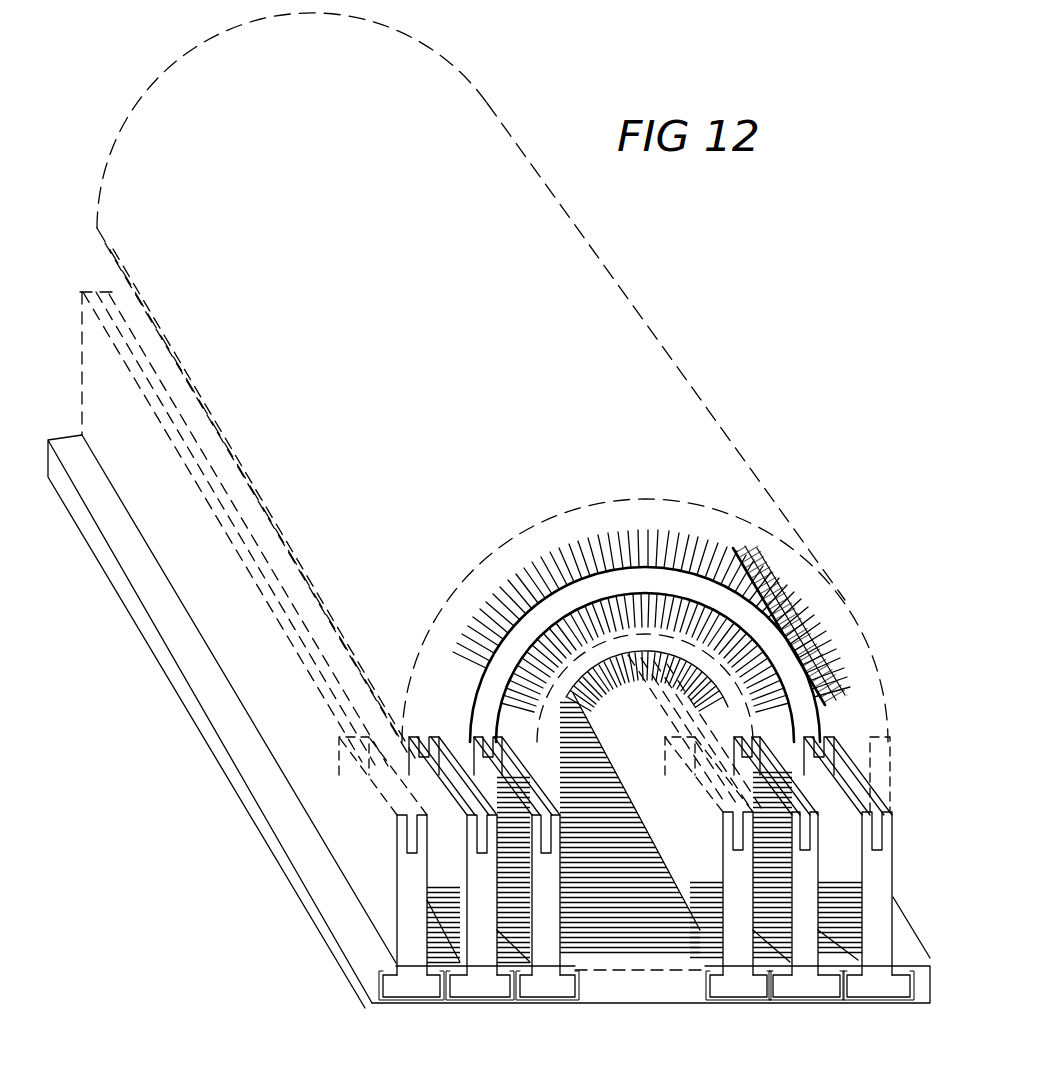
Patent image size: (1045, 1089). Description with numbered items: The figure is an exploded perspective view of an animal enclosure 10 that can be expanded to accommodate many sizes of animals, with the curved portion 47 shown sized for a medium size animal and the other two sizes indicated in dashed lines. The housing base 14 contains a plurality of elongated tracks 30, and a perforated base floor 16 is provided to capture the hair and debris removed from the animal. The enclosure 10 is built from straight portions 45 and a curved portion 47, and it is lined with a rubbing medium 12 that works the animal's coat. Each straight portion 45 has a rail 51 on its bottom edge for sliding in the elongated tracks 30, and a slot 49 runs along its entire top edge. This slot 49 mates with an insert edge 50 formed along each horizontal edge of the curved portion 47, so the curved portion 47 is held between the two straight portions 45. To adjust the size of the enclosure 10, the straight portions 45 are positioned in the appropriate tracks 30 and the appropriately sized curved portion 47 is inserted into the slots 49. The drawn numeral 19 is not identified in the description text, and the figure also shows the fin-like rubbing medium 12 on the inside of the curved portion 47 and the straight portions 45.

The animal enclosure 10 is at (692, 296).
The rubbing medium 12 is at (527, 681).
The housing base 14 is at (250, 792).
The perforated base floor 16 is at (632, 960).
The channel fins 19 is at (670, 947).
The elongated tracks 30 is at (548, 996).
The straight portions 45 is at (460, 907).
The curved portion 47 is at (758, 613).
The slot 49 is at (478, 849).
The insert edge 50 is at (478, 753).
The rail 51 is at (486, 984).